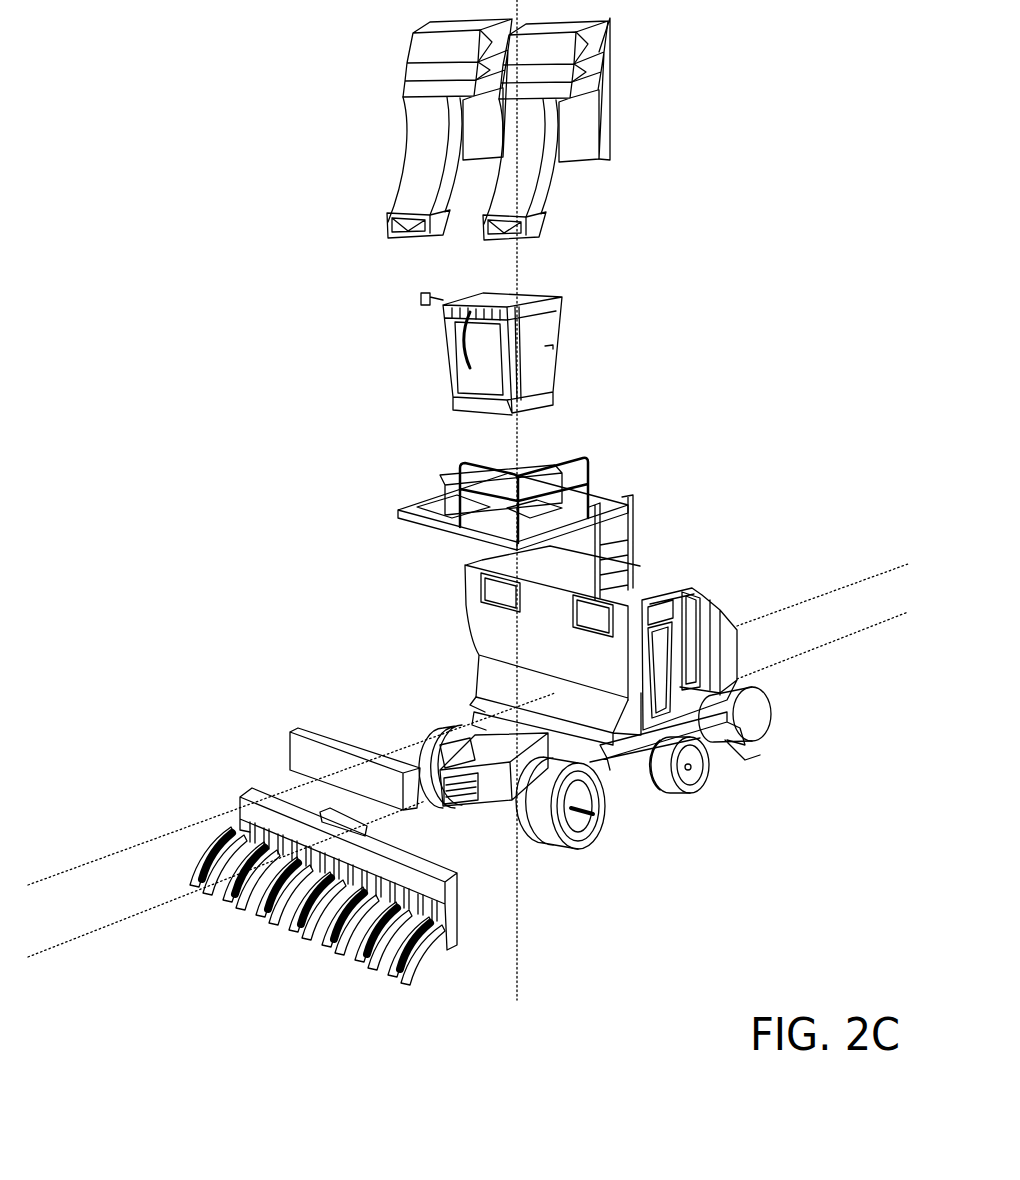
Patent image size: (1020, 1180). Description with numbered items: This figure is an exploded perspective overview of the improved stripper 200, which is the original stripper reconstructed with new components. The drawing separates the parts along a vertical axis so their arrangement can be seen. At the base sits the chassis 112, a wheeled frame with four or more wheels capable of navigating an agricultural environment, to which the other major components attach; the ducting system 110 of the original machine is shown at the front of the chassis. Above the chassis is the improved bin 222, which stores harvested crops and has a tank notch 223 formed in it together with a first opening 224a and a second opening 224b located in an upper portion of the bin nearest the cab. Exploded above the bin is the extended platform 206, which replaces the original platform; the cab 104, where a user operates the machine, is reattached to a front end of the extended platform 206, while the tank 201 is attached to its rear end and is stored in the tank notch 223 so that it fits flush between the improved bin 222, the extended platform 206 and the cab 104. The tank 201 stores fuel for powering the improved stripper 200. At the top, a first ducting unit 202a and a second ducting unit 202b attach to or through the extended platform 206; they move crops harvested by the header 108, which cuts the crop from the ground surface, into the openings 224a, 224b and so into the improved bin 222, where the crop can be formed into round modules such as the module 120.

The improved stripper 200 is at (232, 313).
The first ducting unit 202a is at (408, 152).
The second ducting unit 202b is at (558, 190).
The cab 104 is at (453, 377).
The extended platform 206 is at (398, 512).
The improved bin 222 is at (678, 580).
The first opening 224a is at (492, 601).
The second opening 224b is at (603, 622).
The tank notch 223 is at (499, 700).
The chassis 112 is at (635, 765).
The ducting system 110 is at (485, 805).
The module 120 is at (763, 738).
The tank 201 is at (290, 732).
The header 108 is at (240, 795).